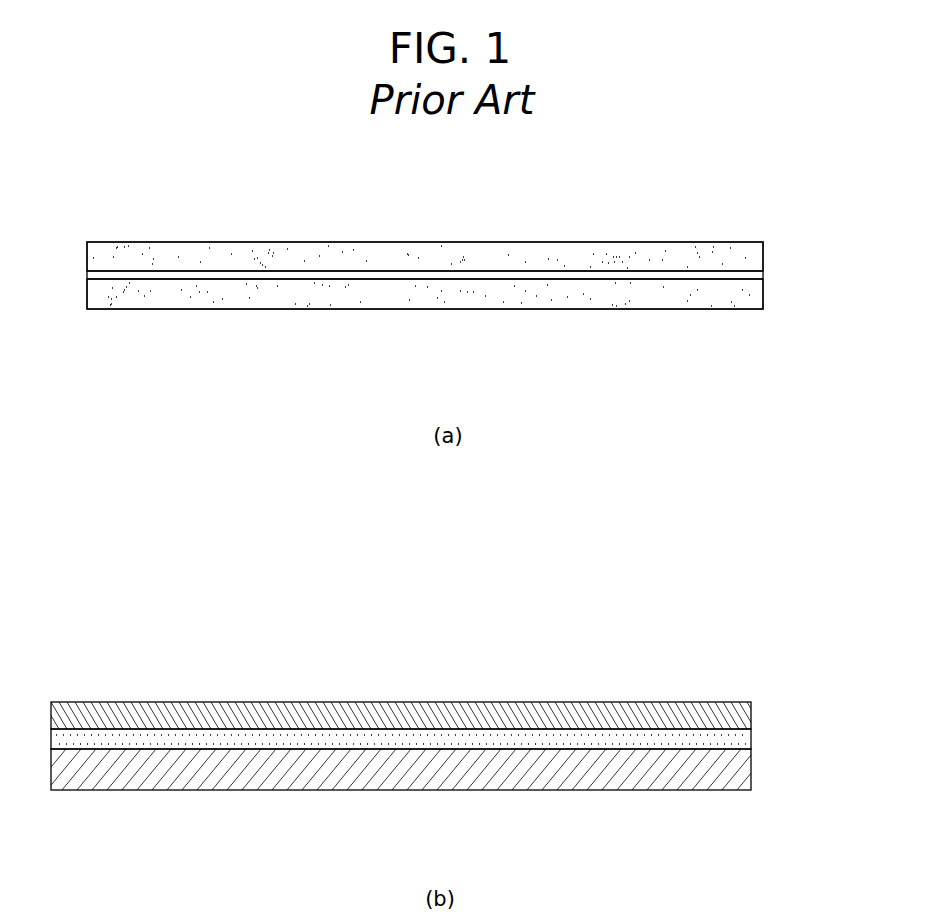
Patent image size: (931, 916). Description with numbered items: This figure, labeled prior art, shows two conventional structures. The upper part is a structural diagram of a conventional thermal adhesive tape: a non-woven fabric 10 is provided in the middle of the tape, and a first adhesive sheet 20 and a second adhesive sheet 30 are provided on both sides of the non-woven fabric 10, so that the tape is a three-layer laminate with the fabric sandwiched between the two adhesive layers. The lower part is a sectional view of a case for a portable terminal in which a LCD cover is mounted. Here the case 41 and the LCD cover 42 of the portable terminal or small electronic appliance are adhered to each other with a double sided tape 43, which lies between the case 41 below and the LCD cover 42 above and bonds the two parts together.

The non-woven fabric 10 is at (762, 277).
The first adhesive sheet 20 is at (741, 254).
The second adhesive sheet 30 is at (741, 298).
The case 41 is at (722, 782).
The LCD cover 42 is at (737, 713).
The double sided tape 43 is at (740, 736).